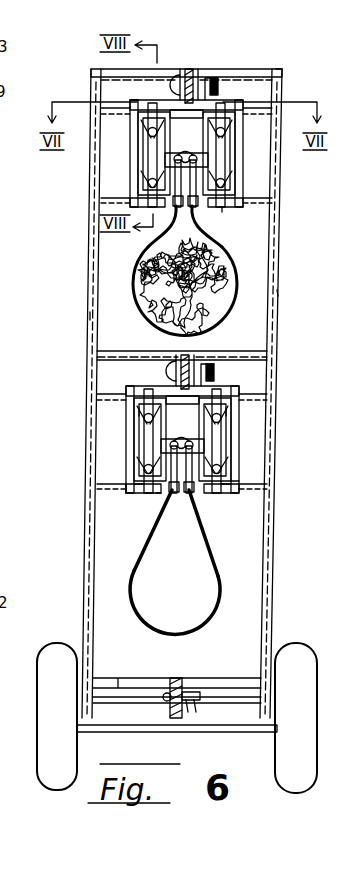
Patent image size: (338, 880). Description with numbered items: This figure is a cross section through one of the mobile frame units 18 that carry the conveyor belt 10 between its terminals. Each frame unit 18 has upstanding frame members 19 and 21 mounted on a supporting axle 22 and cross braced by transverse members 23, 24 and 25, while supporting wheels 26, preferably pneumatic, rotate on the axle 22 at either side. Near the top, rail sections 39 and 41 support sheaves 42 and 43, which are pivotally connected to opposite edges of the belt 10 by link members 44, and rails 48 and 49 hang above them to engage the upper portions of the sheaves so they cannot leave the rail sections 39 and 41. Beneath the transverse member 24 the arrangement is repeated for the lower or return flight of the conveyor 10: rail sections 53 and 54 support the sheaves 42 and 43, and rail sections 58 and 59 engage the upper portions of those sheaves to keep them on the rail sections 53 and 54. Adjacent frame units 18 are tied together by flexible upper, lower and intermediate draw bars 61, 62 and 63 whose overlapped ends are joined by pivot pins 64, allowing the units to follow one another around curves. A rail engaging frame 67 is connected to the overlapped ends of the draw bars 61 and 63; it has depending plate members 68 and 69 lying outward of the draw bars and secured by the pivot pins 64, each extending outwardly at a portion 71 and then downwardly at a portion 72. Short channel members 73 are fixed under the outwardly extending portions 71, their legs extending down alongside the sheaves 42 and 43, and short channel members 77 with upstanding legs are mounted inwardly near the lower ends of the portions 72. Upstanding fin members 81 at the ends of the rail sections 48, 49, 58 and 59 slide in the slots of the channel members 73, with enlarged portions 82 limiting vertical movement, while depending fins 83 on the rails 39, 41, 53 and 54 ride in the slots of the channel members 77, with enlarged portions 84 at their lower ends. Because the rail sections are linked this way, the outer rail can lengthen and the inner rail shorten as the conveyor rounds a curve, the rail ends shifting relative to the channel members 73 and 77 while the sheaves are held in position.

The conveyor belt 10 is at (230, 314).
The mobile frame unit 18 is at (284, 461).
The upstanding frame member 19 is at (90, 316).
The upstanding frame member 21 is at (278, 293).
The supporting axle 22 is at (222, 712).
The transverse member 23 is at (277, 60).
The transverse member 24 is at (262, 351).
The transverse member 25 is at (215, 678).
The supporting wheel 26 is at (57, 645).
The rail section 39 is at (153, 182).
The rail section 41 is at (222, 182).
The sheave 42 is at (143, 160).
The sheave 43 is at (253, 183).
The link member 44 is at (187, 157).
The rail 48 is at (143, 137).
The rail 49 is at (230, 137).
The rail section 53 is at (102, 518).
The rail section 54 is at (275, 477).
The rail section 58 is at (107, 439).
The rail section 59 is at (259, 432).
The upper draw bar 61 is at (199, 74).
The lower draw bar 62 is at (170, 680).
The intermediate draw bar 63 is at (170, 358).
The pivot pin 64 is at (226, 80).
The rail engaging frame 67 is at (130, 93).
The depending plate member 68 is at (181, 92).
The depending plate member 69 is at (214, 74).
The outwardly extending portion 71 is at (151, 387).
The downwardly extending portion 72 is at (187, 455).
The short channel member 73 is at (183, 386).
The short channel member 77 is at (188, 509).
The upstanding fin member 81 is at (227, 110).
The enlarged portion 82 is at (152, 95).
The depending fin 83 is at (134, 535).
The enlarged portion 84 is at (222, 207).